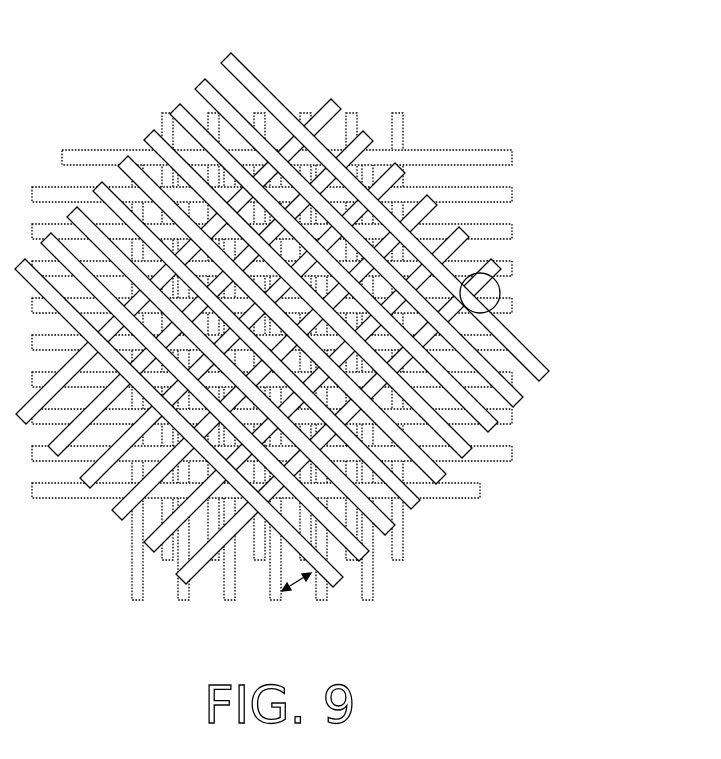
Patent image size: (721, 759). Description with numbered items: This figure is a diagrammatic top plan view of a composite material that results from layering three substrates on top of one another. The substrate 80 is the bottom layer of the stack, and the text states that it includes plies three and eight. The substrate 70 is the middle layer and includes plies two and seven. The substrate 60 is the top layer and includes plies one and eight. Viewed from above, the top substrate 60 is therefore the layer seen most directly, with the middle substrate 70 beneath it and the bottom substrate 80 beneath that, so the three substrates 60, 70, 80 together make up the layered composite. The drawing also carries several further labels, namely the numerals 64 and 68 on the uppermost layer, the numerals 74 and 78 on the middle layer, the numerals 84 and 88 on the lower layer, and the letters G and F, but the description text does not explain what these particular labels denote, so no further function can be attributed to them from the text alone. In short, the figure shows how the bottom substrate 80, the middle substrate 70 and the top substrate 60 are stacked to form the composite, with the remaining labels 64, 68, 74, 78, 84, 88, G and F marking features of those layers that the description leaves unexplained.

The substrate 60 is at (331, 324).
The first diagonal rods 64 is at (331, 100).
The second diagonal rods 68 is at (221, 62).
The substrate 70 is at (513, 157).
The horizontal rods 74 is at (513, 231).
The vertical rods 78 is at (397, 113).
The substrate 80 is at (483, 491).
The horizontal rod 84 is at (301, 525).
The vertical rod 88 is at (132, 578).
The gap G is at (500, 297).
The gap F is at (295, 583).